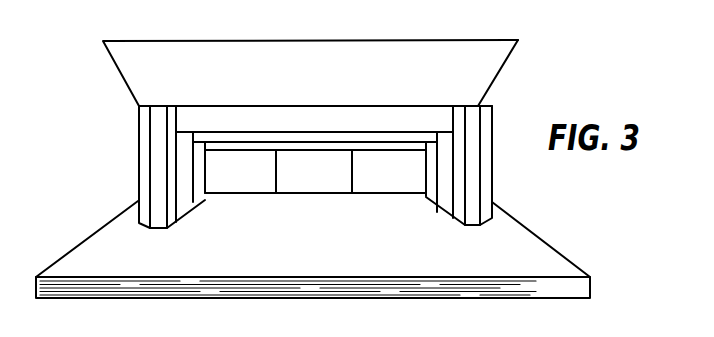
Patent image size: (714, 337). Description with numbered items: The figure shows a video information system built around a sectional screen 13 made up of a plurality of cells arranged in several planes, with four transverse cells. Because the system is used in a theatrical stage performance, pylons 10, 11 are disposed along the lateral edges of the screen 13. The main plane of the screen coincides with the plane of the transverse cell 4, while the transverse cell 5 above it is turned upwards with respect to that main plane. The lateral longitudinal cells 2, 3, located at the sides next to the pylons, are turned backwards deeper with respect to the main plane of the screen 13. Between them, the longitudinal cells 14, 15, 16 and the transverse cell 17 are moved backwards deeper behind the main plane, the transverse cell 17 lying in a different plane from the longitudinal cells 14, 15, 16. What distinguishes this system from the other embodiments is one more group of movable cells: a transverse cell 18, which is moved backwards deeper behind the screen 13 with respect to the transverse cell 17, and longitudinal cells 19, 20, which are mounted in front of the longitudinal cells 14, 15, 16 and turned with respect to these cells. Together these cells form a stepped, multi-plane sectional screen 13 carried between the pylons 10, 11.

The longitudinal cell 2 is at (187, 210).
The longitudinal cell 3 is at (442, 213).
The transverse cell 4 is at (332, 111).
The transverse cell 5 is at (498, 57).
The pylon 10 is at (157, 158).
The pylon 11 is at (477, 195).
The sectional screen 13 is at (413, 40).
The longitudinal cell 14 is at (240, 182).
The longitudinal cell 15 is at (323, 182).
The longitudinal cell 16 is at (395, 182).
The transverse cell 17 is at (378, 135).
The transverse cell 18 is at (403, 145).
The longitudinal cell 19 is at (197, 204).
The longitudinal cell 20 is at (423, 195).